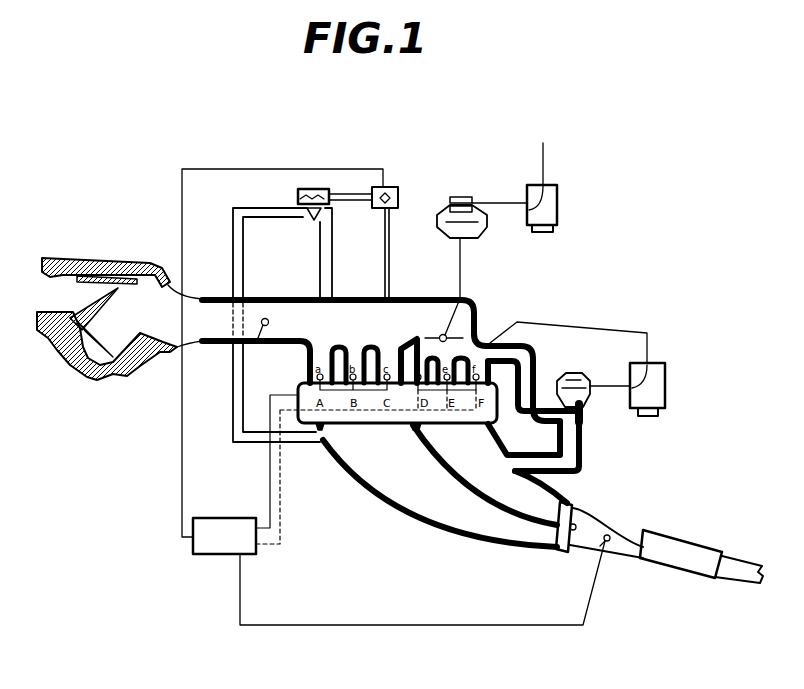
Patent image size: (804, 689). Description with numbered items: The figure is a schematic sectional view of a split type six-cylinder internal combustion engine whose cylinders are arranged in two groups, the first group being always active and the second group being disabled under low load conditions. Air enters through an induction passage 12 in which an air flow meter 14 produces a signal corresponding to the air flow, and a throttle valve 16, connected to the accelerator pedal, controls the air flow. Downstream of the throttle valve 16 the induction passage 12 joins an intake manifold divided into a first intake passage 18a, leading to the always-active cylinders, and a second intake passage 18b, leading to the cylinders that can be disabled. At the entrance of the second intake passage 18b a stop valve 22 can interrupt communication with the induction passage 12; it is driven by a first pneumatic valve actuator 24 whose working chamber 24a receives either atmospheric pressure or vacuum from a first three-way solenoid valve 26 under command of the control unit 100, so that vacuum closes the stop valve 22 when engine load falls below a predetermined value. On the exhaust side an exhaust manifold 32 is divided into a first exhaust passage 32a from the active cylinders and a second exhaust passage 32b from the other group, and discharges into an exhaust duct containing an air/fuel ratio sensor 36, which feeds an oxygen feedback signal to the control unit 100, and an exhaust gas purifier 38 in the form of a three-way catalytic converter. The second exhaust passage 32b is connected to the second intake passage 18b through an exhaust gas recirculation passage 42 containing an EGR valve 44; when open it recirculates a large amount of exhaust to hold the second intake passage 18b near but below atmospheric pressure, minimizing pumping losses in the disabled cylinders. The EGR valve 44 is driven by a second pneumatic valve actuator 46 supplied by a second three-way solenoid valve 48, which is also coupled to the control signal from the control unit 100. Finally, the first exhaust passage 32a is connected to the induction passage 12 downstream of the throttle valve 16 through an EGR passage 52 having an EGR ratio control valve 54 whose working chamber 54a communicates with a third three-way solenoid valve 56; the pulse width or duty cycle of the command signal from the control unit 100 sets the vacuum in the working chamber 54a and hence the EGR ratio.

The induction passage 12 is at (213, 317).
The air flow meter 14 is at (85, 363).
The throttle valve 16 is at (267, 319).
The first intake passage 18a is at (328, 340).
The second intake passage 18b is at (480, 337).
The stop valve 22 is at (433, 334).
The first pneumatic valve actuator 24 is at (443, 205).
The working chamber 24a is at (477, 200).
The first three-way solenoid valve 26 is at (557, 207).
The exhaust manifold 32 is at (502, 543).
The first exhaust passage 32a is at (375, 463).
The second exhaust passage 32b is at (528, 500).
The air/fuel ratio sensor 36 is at (600, 539).
The exhaust gas purifier 38 is at (683, 560).
The exhaust gas recirculation passage 42 is at (568, 452).
The EGR valve 44 is at (585, 423).
The second pneumatic valve actuator 46 is at (575, 373).
The second three-way solenoid valve 48 is at (665, 375).
The EGR passage 52 is at (250, 210).
The EGR ratio control valve 54 is at (303, 188).
The working chamber 54a is at (313, 193).
The third three-way solenoid valve 56 is at (397, 187).
The control unit 100 is at (218, 547).